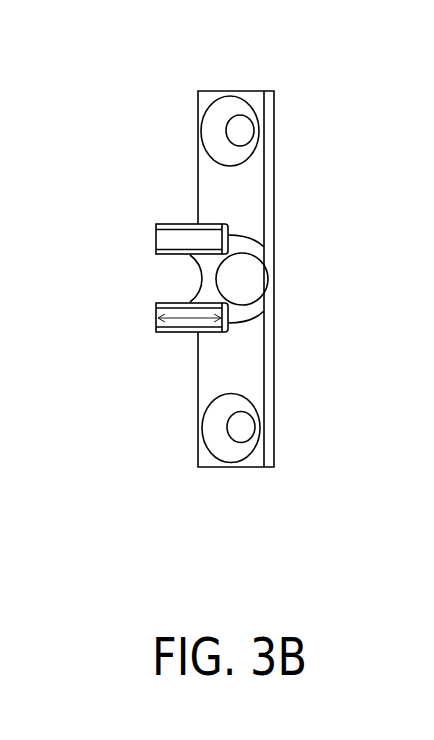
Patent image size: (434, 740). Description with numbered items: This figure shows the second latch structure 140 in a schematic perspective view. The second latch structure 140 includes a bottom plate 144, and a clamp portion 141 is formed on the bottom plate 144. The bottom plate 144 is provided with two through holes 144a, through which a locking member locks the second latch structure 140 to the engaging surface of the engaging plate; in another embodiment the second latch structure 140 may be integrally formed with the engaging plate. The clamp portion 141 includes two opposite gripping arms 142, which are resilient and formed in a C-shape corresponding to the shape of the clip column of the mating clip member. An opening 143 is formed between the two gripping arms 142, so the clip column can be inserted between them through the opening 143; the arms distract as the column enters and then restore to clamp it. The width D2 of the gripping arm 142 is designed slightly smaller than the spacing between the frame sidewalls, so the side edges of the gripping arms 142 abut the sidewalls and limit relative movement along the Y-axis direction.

The second latch structure 140 is at (142, 60).
The clamp portion 141 is at (358, 237).
The gripping arms 142 is at (250, 246).
The opening 143 is at (162, 268).
The bottom plate 144 is at (245, 356).
The through holes 144a is at (236, 428).
The width of the gripping arm D2 is at (192, 320).